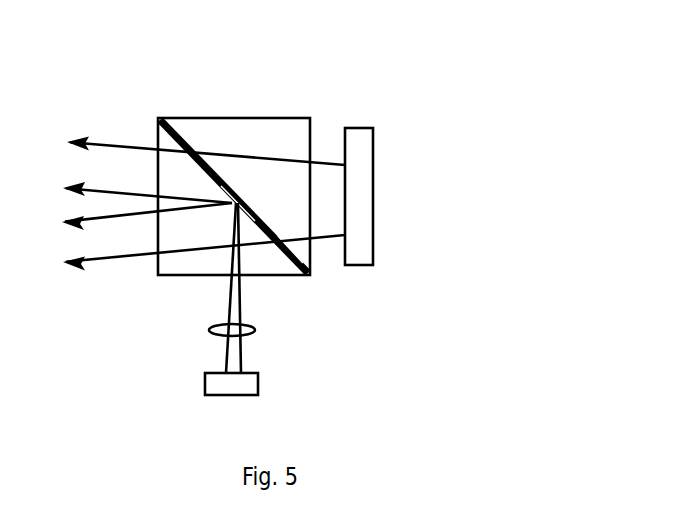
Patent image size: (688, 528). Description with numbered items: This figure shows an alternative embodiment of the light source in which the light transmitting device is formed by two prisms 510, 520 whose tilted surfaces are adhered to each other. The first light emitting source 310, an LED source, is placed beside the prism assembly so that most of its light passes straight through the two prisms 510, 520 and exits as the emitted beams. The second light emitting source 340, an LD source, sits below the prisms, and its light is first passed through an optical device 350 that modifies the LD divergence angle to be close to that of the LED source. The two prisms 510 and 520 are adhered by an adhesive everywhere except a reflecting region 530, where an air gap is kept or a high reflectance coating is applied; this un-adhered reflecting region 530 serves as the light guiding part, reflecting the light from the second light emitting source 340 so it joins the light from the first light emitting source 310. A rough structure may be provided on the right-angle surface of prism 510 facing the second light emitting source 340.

The first light emitting source 310 is at (370, 168).
The second light emitting source 340 is at (250, 395).
The optical device 350 is at (212, 331).
The prism 510 is at (165, 276).
The prism 520 is at (212, 133).
The reflecting region 530 is at (244, 198).